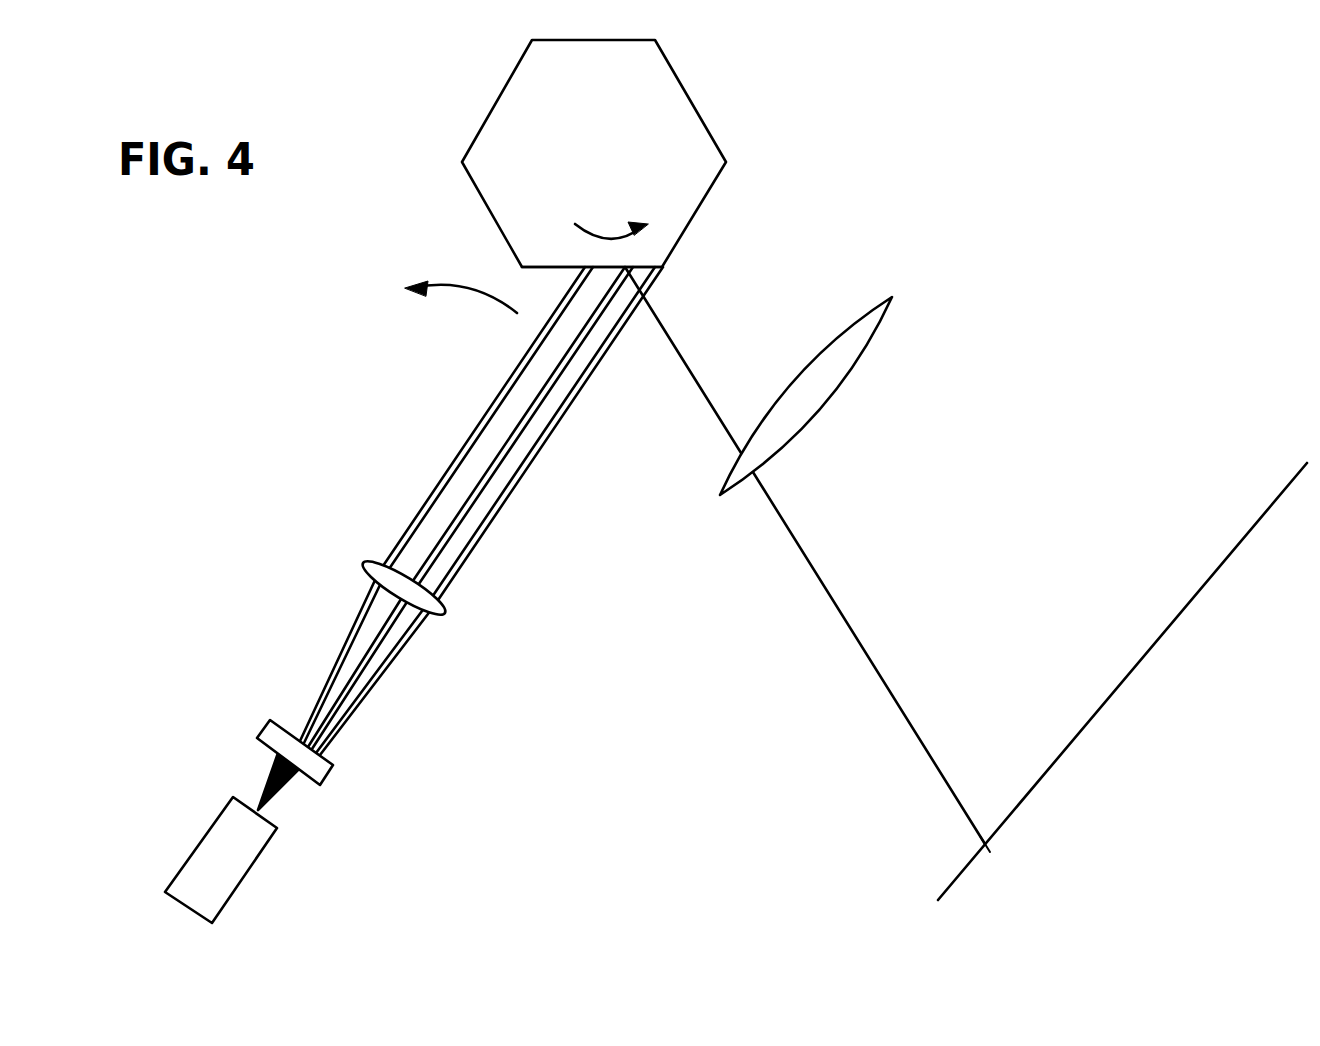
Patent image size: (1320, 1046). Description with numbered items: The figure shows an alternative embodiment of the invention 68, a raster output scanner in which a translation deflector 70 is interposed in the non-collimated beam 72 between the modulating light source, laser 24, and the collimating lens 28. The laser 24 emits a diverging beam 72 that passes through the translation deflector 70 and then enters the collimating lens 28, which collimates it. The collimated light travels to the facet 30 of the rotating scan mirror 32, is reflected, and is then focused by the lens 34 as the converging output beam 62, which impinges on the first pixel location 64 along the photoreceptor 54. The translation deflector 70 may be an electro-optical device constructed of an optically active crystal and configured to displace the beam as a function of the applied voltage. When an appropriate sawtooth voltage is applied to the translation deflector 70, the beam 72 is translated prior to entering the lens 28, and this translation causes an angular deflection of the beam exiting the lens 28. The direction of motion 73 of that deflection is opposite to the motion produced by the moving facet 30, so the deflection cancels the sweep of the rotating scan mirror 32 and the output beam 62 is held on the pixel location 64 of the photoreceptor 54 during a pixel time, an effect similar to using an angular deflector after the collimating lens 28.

The laser 24 is at (205, 832).
The collimating lens 28 is at (363, 563).
The facet 30 is at (662, 267).
The rotating scan mirror 32 is at (726, 162).
The lens 34 is at (872, 335).
The photoreceptor 54 is at (1108, 702).
The output beam 62 is at (893, 702).
The first pixel location 64 is at (985, 846).
The alternative embodiment 68 is at (1058, 181).
The translation deflector 70 is at (332, 772).
The non-collimated beam 72 is at (413, 643).
The direction of motion 73 is at (461, 308).